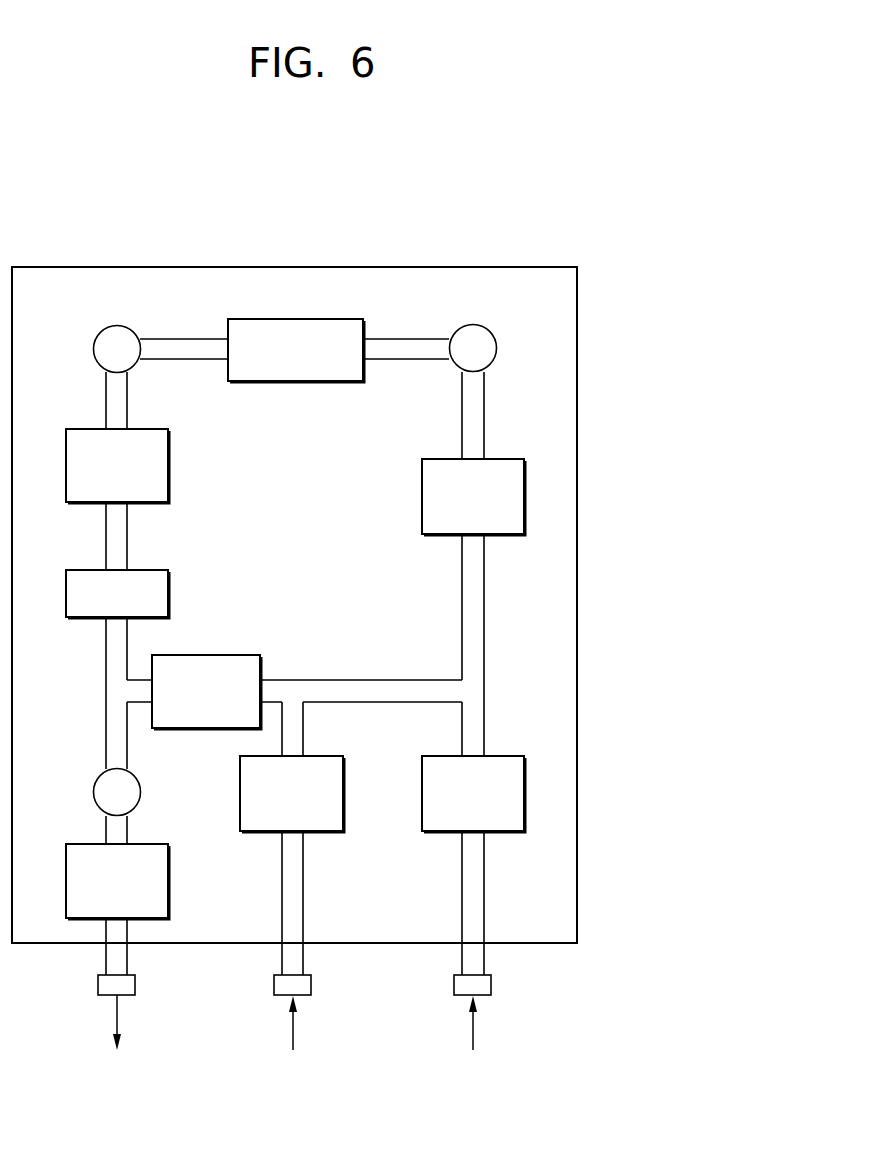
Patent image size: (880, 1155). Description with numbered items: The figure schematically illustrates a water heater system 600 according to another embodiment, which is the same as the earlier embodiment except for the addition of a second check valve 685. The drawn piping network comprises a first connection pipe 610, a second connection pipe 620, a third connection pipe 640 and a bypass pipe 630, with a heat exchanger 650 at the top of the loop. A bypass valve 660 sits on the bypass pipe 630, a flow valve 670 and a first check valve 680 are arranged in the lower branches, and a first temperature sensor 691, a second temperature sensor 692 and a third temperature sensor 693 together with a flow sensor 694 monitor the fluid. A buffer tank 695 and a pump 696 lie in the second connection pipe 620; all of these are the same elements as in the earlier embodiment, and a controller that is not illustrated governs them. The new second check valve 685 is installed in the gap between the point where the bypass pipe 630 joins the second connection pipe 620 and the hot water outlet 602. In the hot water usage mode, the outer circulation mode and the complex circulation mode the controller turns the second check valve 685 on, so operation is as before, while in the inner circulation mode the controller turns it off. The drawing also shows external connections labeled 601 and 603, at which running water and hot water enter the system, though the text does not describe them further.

The water heater system 600 is at (500, 228).
The running water inlet 601 is at (491, 985).
The hot water outlet 602 is at (135, 985).
The hot water inlet 603 is at (311, 985).
The first connection pipe 610 is at (484, 648).
The second connection pipe 620 is at (106, 639).
The bypass pipe 630 is at (362, 679).
The third connection pipe 640 is at (303, 889).
The heat exchanger 650 is at (296, 318).
The bypass valve 660 is at (212, 654).
The flow valve 670 is at (500, 755).
The first check valve 680 is at (322, 755).
The second check valve 685 is at (148, 843).
The first temperature sensor 691 is at (496, 349).
The second temperature sensor 692 is at (93, 349).
The third temperature sensor 693 is at (93, 792).
The flow sensor 694 is at (500, 458).
The buffer tank 695 is at (148, 428).
The pump 696 is at (148, 569).